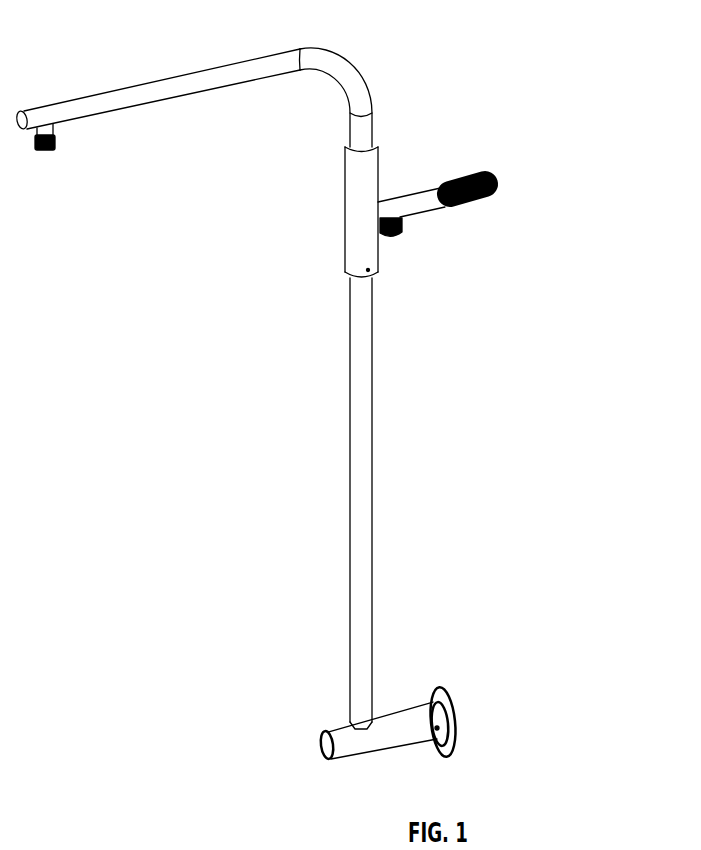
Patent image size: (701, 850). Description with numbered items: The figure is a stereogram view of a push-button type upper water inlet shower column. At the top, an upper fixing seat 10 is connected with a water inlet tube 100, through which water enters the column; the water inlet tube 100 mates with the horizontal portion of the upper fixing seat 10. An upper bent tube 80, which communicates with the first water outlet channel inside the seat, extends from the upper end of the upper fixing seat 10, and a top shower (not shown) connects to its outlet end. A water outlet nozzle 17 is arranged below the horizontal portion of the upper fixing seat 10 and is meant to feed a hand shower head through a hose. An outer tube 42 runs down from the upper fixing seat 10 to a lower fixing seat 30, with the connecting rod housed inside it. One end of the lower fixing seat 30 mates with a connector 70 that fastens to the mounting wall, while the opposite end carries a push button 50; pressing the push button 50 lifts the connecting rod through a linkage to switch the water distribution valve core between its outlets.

The upper bent tube 80 is at (353, 78).
The upper fixing seat 10 is at (345, 215).
The water inlet tube 100 is at (498, 186).
The water outlet nozzle 17 is at (402, 227).
The outer tube 42 is at (360, 487).
The lower fixing seat 30 is at (343, 742).
The push button 50 is at (320, 746).
The connector 70 is at (443, 698).